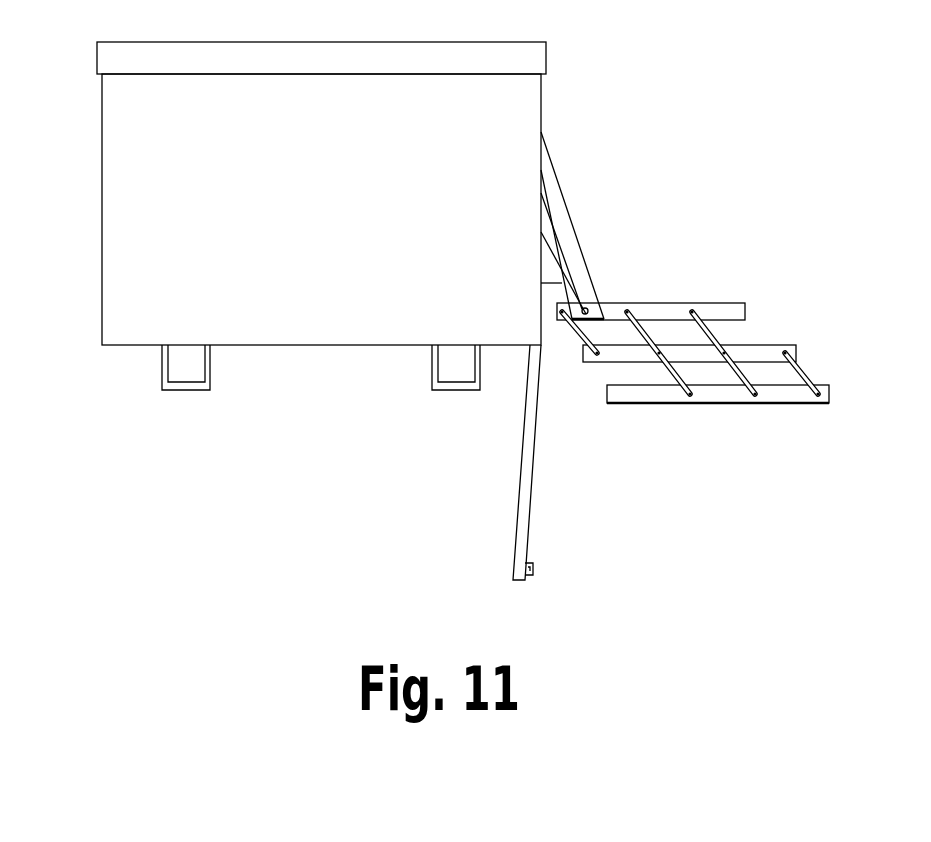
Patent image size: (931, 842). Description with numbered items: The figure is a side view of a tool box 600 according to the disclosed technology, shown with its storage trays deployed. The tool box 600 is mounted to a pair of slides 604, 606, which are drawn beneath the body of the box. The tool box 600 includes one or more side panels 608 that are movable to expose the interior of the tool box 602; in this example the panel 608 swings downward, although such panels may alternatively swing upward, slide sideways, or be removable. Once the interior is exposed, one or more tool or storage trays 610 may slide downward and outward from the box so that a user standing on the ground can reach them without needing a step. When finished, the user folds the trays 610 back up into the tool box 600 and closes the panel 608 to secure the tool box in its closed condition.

The tool box 600 is at (100, 108).
The tool box 602 is at (558, 143).
The slide 604 is at (182, 391).
The slide 606 is at (455, 392).
The side panel 608 is at (520, 470).
The storage tray 610 is at (795, 328).